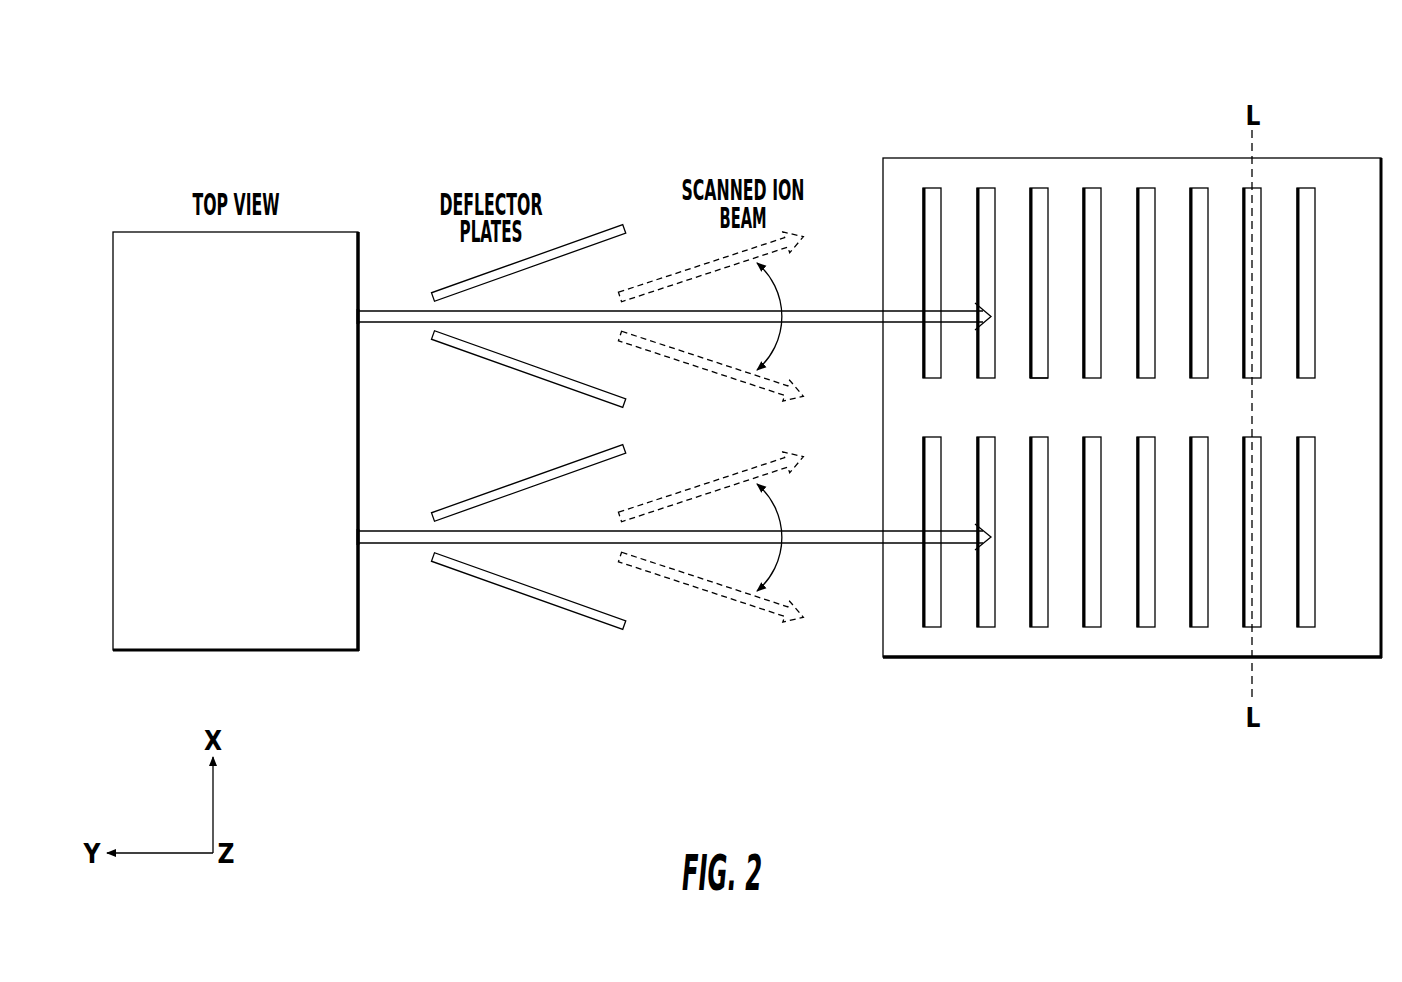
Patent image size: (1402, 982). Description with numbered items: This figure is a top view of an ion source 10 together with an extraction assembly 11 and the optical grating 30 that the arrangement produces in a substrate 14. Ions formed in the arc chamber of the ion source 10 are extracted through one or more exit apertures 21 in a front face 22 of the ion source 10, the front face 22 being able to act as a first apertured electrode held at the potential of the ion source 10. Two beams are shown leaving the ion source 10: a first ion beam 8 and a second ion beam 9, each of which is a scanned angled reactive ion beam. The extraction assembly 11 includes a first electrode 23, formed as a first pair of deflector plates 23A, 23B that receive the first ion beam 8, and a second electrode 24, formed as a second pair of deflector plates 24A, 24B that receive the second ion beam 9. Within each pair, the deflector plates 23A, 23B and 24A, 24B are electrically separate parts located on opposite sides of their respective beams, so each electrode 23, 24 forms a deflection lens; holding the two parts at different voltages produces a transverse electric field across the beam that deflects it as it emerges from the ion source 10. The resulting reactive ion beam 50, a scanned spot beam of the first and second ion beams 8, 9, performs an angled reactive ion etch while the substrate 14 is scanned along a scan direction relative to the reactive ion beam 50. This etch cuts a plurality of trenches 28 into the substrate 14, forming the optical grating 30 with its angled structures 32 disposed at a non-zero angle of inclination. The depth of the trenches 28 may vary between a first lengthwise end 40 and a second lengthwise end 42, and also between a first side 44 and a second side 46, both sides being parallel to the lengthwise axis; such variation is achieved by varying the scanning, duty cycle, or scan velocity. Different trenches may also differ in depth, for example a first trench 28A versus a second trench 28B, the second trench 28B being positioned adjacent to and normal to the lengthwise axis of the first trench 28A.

The first ion beam 8 is at (390, 311).
The second ion beam 9 is at (390, 531).
The ion source 10 is at (272, 650).
The extraction assembly 11 is at (504, 630).
The substrate 14 is at (1078, 122).
The exit apertures 21 is at (360, 323).
The front face 22 is at (362, 613).
The first electrode 23 is at (463, 367).
The deflector plate 23A is at (613, 231).
The deflector plate 23B is at (585, 388).
The second electrode 24 is at (463, 588).
The deflector plate 24A is at (558, 472).
The deflector plate 24B is at (585, 607).
The trenches 28 is at (1089, 412).
The first trench 28A is at (1198, 210).
The second trench 28B is at (1304, 206).
The optical grating 30 is at (1347, 158).
The angled structures 32 is at (1168, 198).
The first lengthwise end 40 is at (1040, 200).
The second lengthwise end 42 is at (1040, 371).
The first side 44 is at (1137, 582).
The second side 46 is at (1178, 657).
The reactive ion beam 50 is at (737, 378).